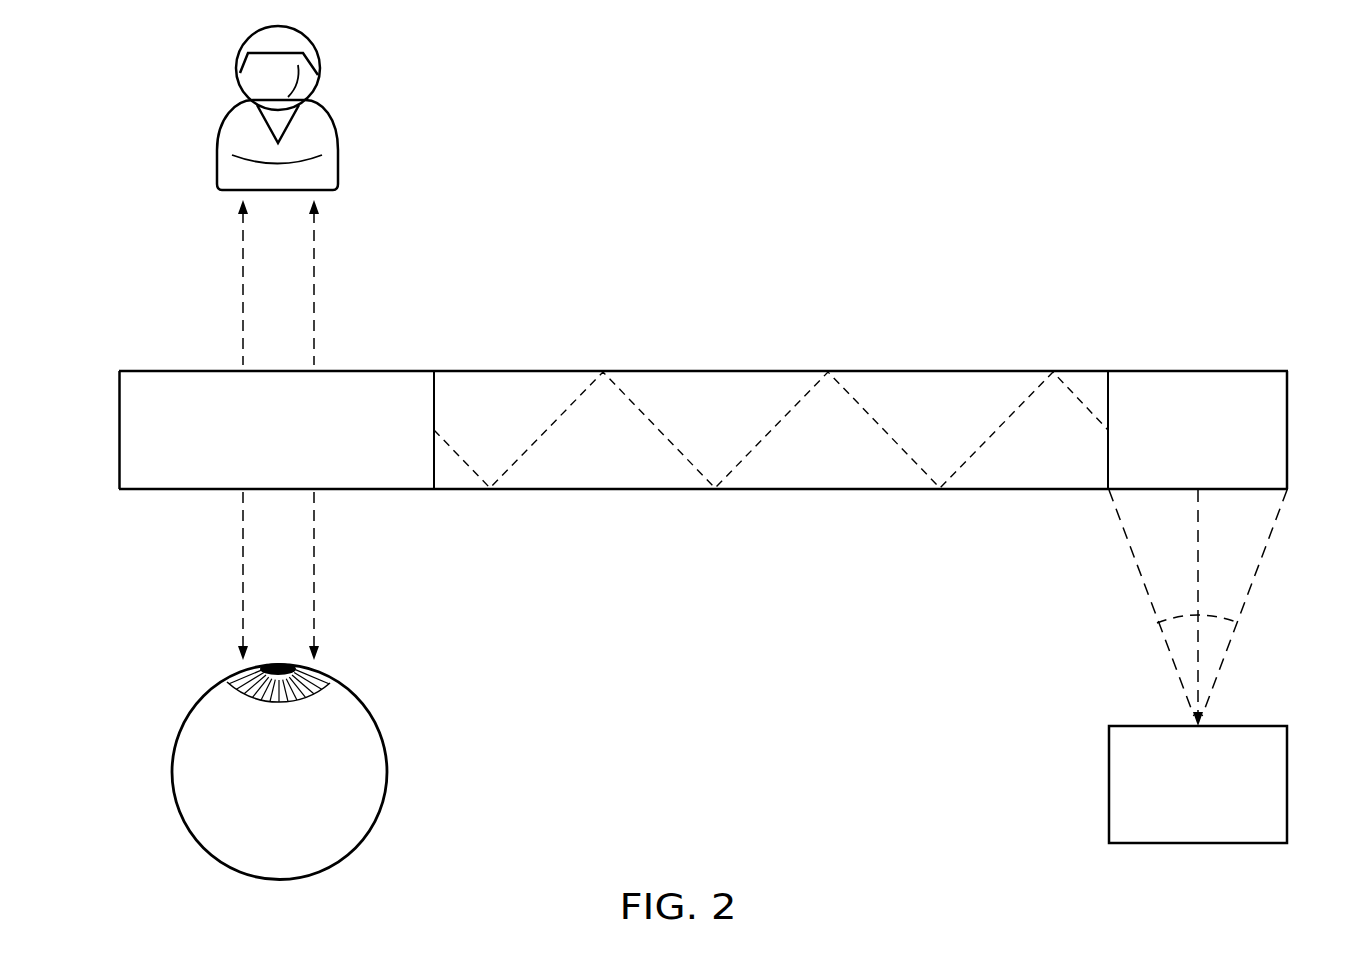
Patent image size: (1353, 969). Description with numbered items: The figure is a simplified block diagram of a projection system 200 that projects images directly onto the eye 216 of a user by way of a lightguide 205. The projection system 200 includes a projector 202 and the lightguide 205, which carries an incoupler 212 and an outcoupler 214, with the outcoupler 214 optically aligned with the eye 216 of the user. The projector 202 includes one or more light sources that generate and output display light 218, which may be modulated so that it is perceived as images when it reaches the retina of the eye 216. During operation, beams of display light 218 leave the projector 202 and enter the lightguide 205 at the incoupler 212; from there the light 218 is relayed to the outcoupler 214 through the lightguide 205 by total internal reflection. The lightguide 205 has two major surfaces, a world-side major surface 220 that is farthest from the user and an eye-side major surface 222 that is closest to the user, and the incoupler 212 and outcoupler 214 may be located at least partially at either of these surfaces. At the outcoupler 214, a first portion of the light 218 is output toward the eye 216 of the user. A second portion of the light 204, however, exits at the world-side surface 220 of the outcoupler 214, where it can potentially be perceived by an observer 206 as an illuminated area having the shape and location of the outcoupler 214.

The projection system 200 is at (1174, 136).
The projector 202 is at (1175, 817).
The second portion of the light 204 is at (314, 283).
The lightguide 205 is at (579, 340).
The observer 206 is at (238, 70).
The incoupler 212 is at (1174, 462).
The outcoupler 214 is at (254, 462).
The eye 216 is at (190, 835).
The display light 218 is at (314, 578).
The major surface 220 is at (703, 370).
The major surface 222 is at (819, 490).